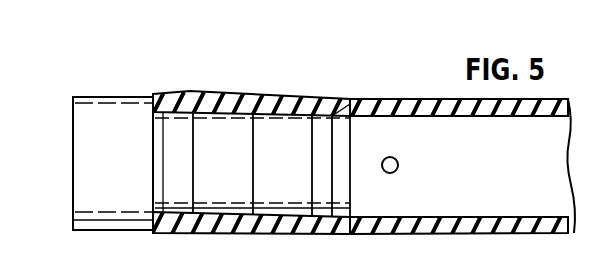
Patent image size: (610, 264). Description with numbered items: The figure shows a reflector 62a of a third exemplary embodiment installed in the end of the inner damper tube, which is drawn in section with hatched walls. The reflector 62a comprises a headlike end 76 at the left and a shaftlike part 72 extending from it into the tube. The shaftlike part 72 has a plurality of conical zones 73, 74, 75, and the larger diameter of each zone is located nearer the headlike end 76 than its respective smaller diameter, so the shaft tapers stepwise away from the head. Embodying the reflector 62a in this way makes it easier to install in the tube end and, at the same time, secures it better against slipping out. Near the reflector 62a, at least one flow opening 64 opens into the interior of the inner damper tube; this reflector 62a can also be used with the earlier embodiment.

The reflector 62a is at (100, 146).
The flow opening 64 is at (391, 157).
The shaftlike part 72 is at (244, 92).
The conical zone 73 is at (350, 113).
The conical zone 74 is at (278, 100).
The conical zone 75 is at (211, 122).
The headlike end 76 is at (127, 112).